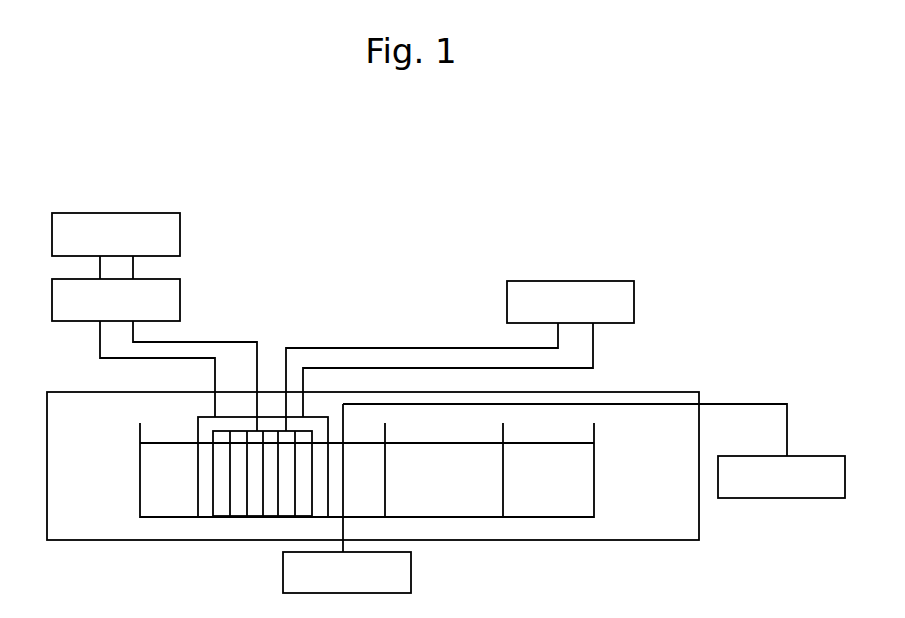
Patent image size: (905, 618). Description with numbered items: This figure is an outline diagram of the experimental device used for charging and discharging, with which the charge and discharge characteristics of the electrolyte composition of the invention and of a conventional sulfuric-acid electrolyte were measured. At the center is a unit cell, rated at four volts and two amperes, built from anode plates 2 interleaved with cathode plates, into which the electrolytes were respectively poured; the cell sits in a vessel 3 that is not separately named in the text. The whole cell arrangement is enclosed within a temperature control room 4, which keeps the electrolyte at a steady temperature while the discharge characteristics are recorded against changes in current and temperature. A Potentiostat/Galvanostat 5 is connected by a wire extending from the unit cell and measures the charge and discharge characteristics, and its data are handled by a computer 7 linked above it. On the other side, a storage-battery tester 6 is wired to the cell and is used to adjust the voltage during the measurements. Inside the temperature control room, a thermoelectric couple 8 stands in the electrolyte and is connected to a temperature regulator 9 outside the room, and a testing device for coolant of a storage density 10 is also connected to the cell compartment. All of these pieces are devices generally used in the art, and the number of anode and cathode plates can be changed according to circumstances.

The anode plates 2 is at (354, 418).
The electrolytic tank 3 is at (367, 470).
The temperature control room 4 is at (361, 466).
The Potentiostat/Galvanostat 5 is at (116, 300).
The storage-battery tester 6 is at (570, 302).
The computer 7 is at (116, 246).
The thermoelectric couple 8 is at (444, 463).
The temperature regulator 9 is at (594, 451).
The testing device for coolant of a storage density 10 is at (347, 498).